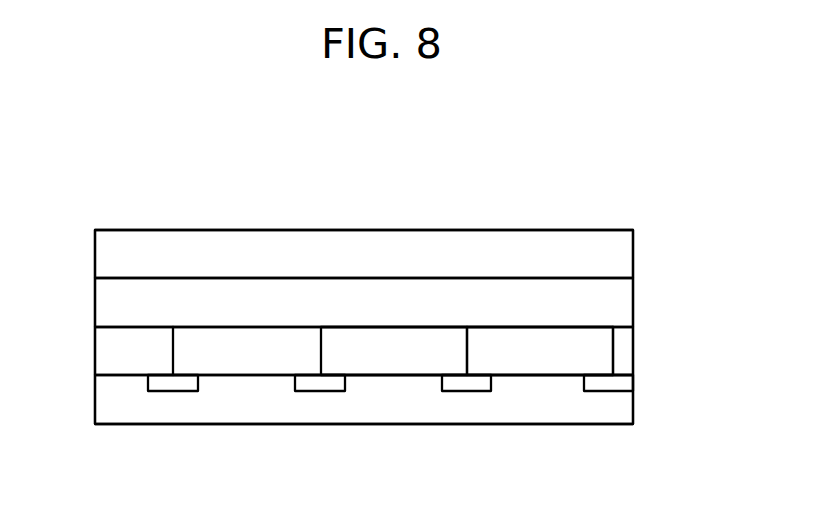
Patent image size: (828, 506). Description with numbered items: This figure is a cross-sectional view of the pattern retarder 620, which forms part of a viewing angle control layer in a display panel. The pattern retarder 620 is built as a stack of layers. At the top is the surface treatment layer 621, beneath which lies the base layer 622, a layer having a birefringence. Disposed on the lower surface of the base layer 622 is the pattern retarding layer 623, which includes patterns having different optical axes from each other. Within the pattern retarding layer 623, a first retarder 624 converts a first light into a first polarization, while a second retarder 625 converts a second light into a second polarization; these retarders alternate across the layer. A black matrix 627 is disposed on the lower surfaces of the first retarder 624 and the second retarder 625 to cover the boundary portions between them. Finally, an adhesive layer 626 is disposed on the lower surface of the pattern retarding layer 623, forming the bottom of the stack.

The pattern retarder 620 is at (543, 175).
The surface treatment layer 621 is at (627, 253).
The base layer 622 is at (627, 300).
The pattern retarding layer 623 is at (627, 349).
The first retarder 624 is at (387, 360).
The second retarder 625 is at (543, 362).
The adhesive layer 626 is at (627, 407).
The black matrix 627 is at (467, 383).